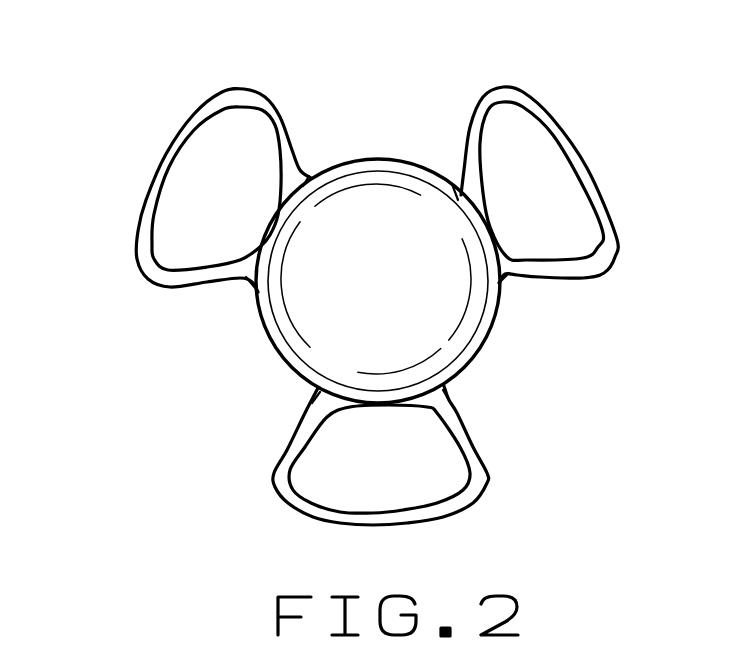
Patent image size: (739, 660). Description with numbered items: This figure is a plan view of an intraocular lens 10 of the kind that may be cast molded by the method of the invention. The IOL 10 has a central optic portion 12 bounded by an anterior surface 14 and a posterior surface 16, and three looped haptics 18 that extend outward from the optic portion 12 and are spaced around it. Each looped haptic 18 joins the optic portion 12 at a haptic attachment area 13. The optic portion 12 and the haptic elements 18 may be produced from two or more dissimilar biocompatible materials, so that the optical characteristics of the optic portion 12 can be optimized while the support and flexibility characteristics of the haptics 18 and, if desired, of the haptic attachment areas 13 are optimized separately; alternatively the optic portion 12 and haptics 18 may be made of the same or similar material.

The intraocular lens 10 is at (607, 208).
The optic portion 12 is at (437, 317).
The haptic attachment area 13 is at (298, 174).
The anterior surface 14 is at (377, 207).
The posterior surface 16 is at (337, 247).
The looped haptics 18 is at (498, 88).